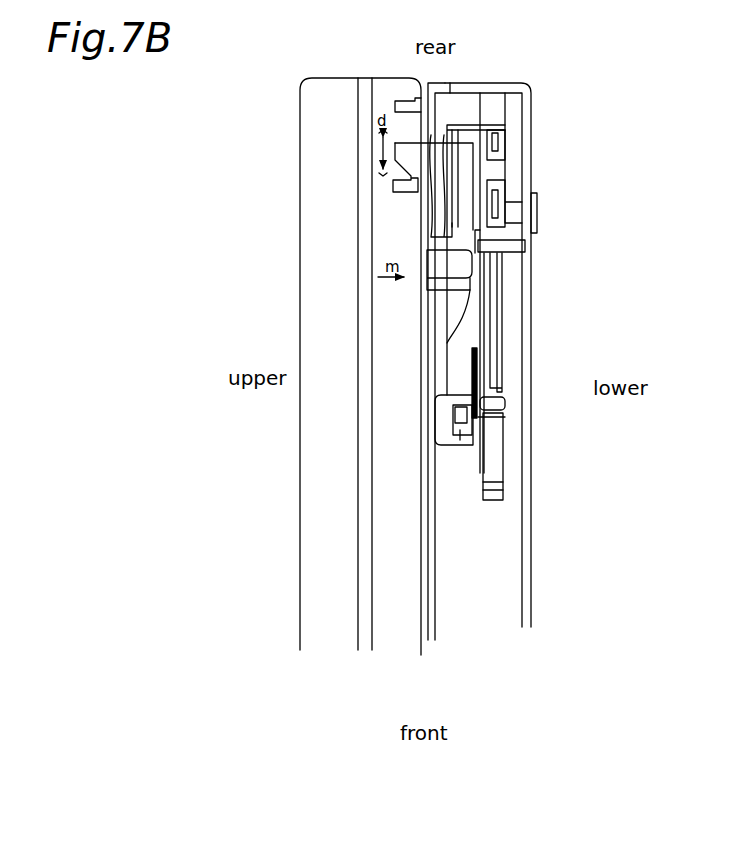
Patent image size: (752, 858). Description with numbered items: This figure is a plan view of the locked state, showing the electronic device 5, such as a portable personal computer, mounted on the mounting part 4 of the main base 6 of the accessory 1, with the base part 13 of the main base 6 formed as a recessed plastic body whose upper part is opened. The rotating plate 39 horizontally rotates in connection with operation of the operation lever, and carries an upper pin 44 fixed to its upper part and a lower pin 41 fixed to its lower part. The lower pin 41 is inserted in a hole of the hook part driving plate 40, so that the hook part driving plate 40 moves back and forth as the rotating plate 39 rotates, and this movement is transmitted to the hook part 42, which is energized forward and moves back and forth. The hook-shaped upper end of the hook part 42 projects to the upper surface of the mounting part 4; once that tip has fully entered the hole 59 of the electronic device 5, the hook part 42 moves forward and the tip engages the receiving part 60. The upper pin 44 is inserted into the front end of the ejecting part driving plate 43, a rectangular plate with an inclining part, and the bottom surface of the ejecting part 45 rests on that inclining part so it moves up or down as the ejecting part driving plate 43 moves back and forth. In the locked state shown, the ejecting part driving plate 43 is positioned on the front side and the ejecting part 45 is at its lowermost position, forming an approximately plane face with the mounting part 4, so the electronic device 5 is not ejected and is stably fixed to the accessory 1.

The accessory 1 is at (477, 627).
The mounting part 4 is at (435, 594).
The electronic device 5 is at (332, 631).
The main base 6 is at (536, 587).
The base part 13 is at (533, 457).
The rotating plate 39 is at (477, 362).
The hook part driving plate 40 is at (493, 470).
The lower pin 41 is at (500, 418).
The hook part 42 is at (463, 158).
The ejecting part driving plate 43 is at (462, 373).
The upper pin 44 is at (465, 428).
The ejecting part 45 is at (437, 267).
The hole 59 is at (420, 120).
The receiving part 60 is at (417, 174).